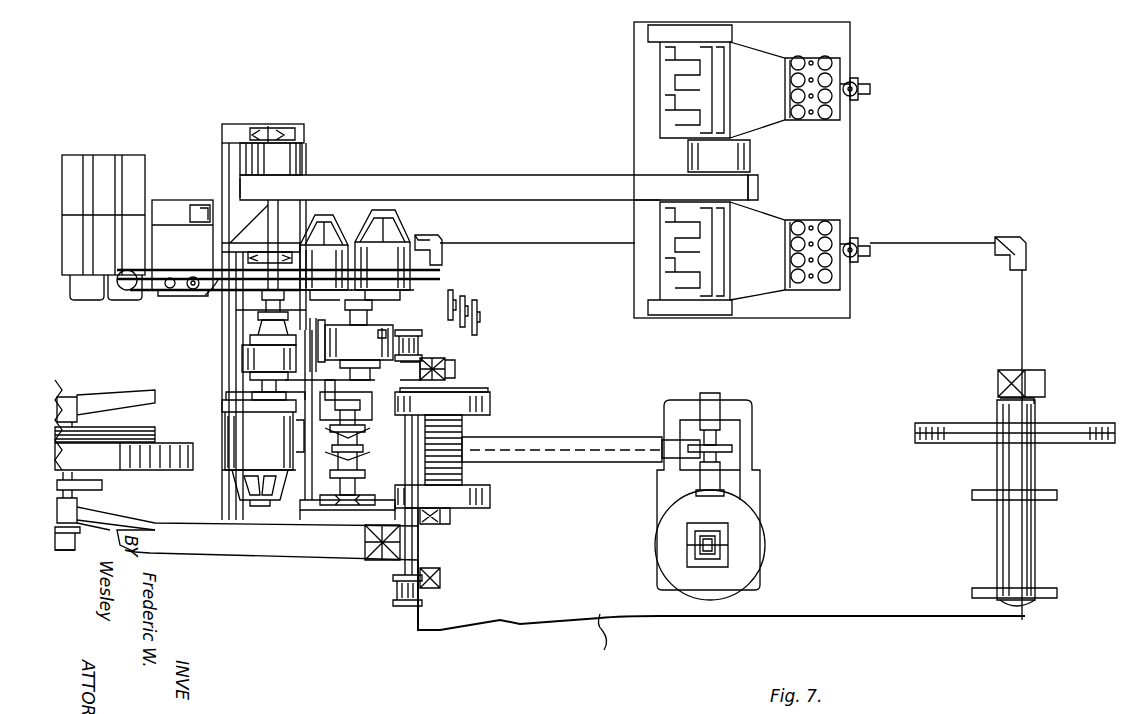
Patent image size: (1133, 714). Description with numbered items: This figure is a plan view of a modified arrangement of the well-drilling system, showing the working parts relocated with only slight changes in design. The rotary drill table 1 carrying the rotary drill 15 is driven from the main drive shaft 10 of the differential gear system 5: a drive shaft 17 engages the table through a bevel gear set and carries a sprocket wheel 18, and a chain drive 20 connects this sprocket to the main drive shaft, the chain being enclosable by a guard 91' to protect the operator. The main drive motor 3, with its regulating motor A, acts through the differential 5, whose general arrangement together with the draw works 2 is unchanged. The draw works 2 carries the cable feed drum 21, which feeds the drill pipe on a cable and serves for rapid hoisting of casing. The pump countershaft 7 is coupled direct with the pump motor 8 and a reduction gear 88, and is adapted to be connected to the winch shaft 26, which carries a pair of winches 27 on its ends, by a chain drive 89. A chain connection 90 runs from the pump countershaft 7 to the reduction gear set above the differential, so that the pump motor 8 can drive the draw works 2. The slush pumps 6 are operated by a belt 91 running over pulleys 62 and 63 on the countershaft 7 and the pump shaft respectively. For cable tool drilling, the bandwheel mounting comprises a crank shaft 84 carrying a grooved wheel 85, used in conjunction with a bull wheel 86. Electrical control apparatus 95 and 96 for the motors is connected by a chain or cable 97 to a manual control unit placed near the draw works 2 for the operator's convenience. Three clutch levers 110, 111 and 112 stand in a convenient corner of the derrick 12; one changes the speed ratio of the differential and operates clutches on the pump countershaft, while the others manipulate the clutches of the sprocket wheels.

The rotary drill table 1 is at (750, 545).
The draw works 2 is at (490, 398).
The main drive motor 3 is at (400, 236).
The cone A is at (334, 238).
The differential gear system 5 is at (332, 343).
The slush pumps 6 is at (850, 180).
The pump countershaft 7 is at (287, 212).
The pump motor 8 is at (240, 430).
The main drive shaft 10 is at (350, 464).
The derrick 12 is at (721, 612).
The rotary drill 15 is at (712, 545).
The drive shaft 17 is at (720, 432).
The sprocket wheel 18 is at (732, 449).
The chain drive 20 is at (665, 440).
The cable feed drum 21 is at (470, 472).
The winch shaft 26 is at (420, 546).
The winches 27 is at (420, 345).
The pulley 62 is at (305, 158).
The pulley 63 is at (752, 158).
The crank shaft 84 is at (102, 485).
The grooved wheel 85 is at (157, 432).
The bull wheel 86 is at (1080, 444).
The reduction gear 88 is at (245, 360).
The chain drive 89 is at (448, 362).
The chain connection 90 is at (262, 323).
The belt 91 is at (494, 167).
The guard 91' is at (562, 435).
The electrical control apparatus 95 is at (120, 160).
The electrical control apparatus 96 is at (170, 210).
The chain or cable 97 is at (215, 300).
The clutch lever 110 is at (452, 292).
The clutch lever 111 is at (466, 300).
The clutch lever 112 is at (478, 308).